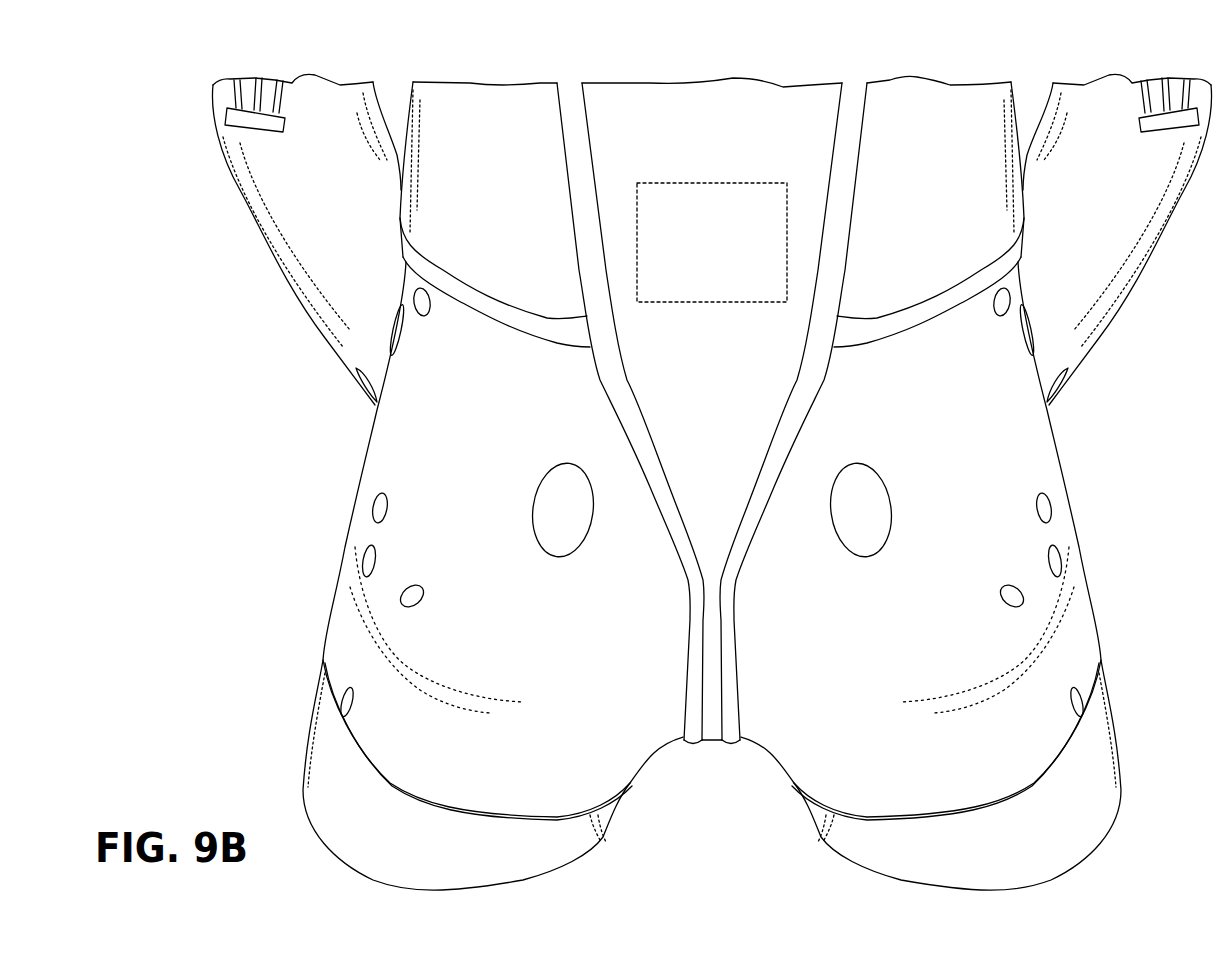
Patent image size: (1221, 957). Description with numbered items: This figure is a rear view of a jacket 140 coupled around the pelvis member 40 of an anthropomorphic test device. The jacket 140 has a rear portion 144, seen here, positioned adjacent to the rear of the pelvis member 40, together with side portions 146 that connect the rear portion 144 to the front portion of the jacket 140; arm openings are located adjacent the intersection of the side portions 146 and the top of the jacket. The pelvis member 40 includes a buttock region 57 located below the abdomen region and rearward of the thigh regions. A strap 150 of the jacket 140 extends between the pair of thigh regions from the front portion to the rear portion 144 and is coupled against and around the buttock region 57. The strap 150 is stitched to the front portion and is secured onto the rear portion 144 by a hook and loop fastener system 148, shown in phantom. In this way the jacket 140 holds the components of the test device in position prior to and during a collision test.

The pelvis member 40 is at (393, 432).
The buttock region 57 is at (487, 627).
The jacket 140 is at (438, 128).
The rear portion 144 is at (537, 153).
The side portions 146 is at (400, 180).
The hook and loop fastener system 148 is at (787, 267).
The strap 150 is at (707, 741).